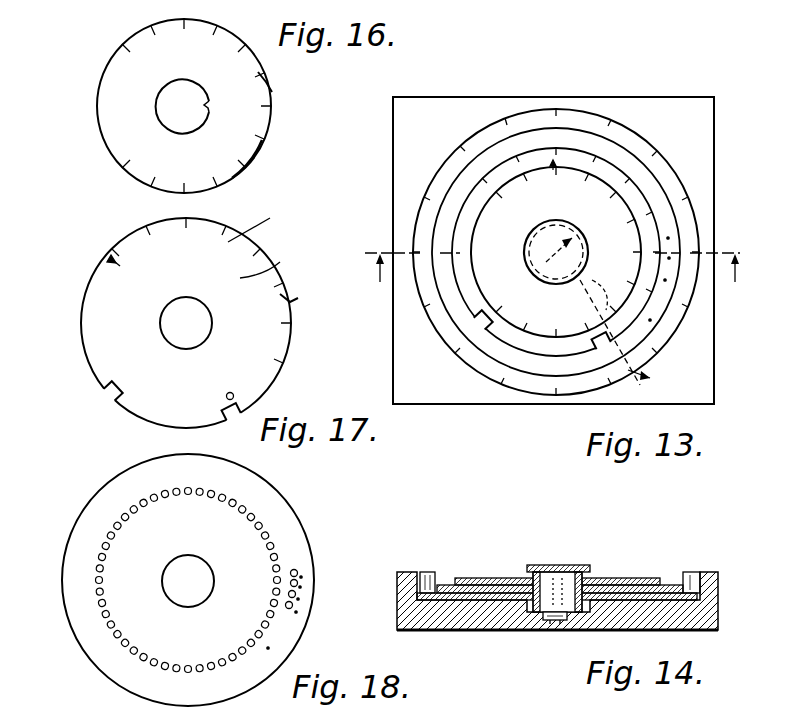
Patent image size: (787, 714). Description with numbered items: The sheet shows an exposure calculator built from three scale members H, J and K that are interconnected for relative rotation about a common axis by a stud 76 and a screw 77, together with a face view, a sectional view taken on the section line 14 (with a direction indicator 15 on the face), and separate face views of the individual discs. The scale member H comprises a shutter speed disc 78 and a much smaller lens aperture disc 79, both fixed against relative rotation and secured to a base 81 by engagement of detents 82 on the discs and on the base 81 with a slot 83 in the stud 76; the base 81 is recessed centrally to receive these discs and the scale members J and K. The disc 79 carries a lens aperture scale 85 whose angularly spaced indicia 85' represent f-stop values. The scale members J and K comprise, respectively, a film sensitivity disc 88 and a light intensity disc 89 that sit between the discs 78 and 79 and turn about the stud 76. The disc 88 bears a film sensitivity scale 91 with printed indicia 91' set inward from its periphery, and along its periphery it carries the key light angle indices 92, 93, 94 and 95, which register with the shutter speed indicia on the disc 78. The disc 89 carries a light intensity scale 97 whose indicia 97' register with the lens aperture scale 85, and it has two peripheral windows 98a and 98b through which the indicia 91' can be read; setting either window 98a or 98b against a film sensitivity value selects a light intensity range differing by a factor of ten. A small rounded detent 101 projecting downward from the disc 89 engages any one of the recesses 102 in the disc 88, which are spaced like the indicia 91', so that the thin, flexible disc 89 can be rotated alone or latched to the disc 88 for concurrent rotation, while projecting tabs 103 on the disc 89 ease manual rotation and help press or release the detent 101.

In FIG. 13, the section line 14 is at (554, 280).
In FIG. 13, the section line / direction arrow 15 is at (604, 311).
In FIG. 13, the stud 76 is at (535, 243).
In FIG. 14, the stud 76 is at (545, 571).
In FIG. 14, the screw 77 is at (555, 625).
In FIG. 13, the shutter speed disc 78 is at (640, 148).
In FIG. 14, the shutter speed disc 78 is at (718, 593).
In FIG. 16, the lens aperture disc 79 is at (115, 125).
In FIG. 13, the lens aperture disc 79 is at (556, 252).
In FIG. 14, the lens aperture disc 79 is at (625, 577).
In FIG. 14, the base 81 is at (466, 624).
In FIG. 16, the detents 82 is at (206, 106).
In FIG. 14, the detents 82 is at (580, 572).
In FIG. 13, the slot 83 is at (580, 230).
In FIG. 14, the slot 83 is at (580, 565).
In FIG. 16, the lens aperture scale 85 is at (267, 158).
In FIG. 16, the lens aperture indicia 85' is at (287, 81).
In FIG. 13, the film sensitivity disc 88 is at (462, 183).
In FIG. 14, the film sensitivity disc 88 is at (512, 600).
In FIG. 18, the film sensitivity disc 88 is at (138, 473).
In FIG. 17, the light intensity disc 89 is at (280, 262).
In FIG. 13, the light intensity disc 89 is at (456, 284).
In FIG. 18, the film sensitivity scale 91 is at (52, 592).
In FIG. 18, the film sensitivity indicia 91' is at (74, 646).
In FIG. 18, the key light angle index 92 is at (306, 572).
In FIG. 18, the key light angle index 93 is at (305, 596).
In FIG. 18, the key light angle index 94 is at (302, 617).
In FIG. 18, the key light angle index 95 is at (276, 668).
In FIG. 17, the light intensity scale 97 is at (264, 221).
In FIG. 17, the light intensity indicia 97' is at (306, 293).
In FIG. 17, the light intensity range opening 98a is at (222, 397).
In FIG. 13, the light intensity range opening 98a is at (604, 342).
In FIG. 17, the light intensity range opening 98b is at (113, 376).
In FIG. 13, the light intensity range opening 98b is at (478, 326).
In FIG. 17, the detent 101 is at (241, 374).
In FIG. 13, the detent 101 is at (608, 286).
In FIG. 18, the recesses 102 is at (252, 520).
In FIG. 13, the projecting tabs 103 is at (472, 330).
In FIG. 13, the scale member H is at (662, 199).
In FIG. 14, the scale member H is at (696, 582).
In FIG. 13, the scale member J is at (500, 353).
In FIG. 14, the scale member J is at (452, 572).
In FIG. 18, the scale member J is at (290, 531).
In FIG. 17, the scale member K is at (96, 341).
In FIG. 13, the scale member K is at (454, 251).
In FIG. 14, the scale member K is at (465, 578).